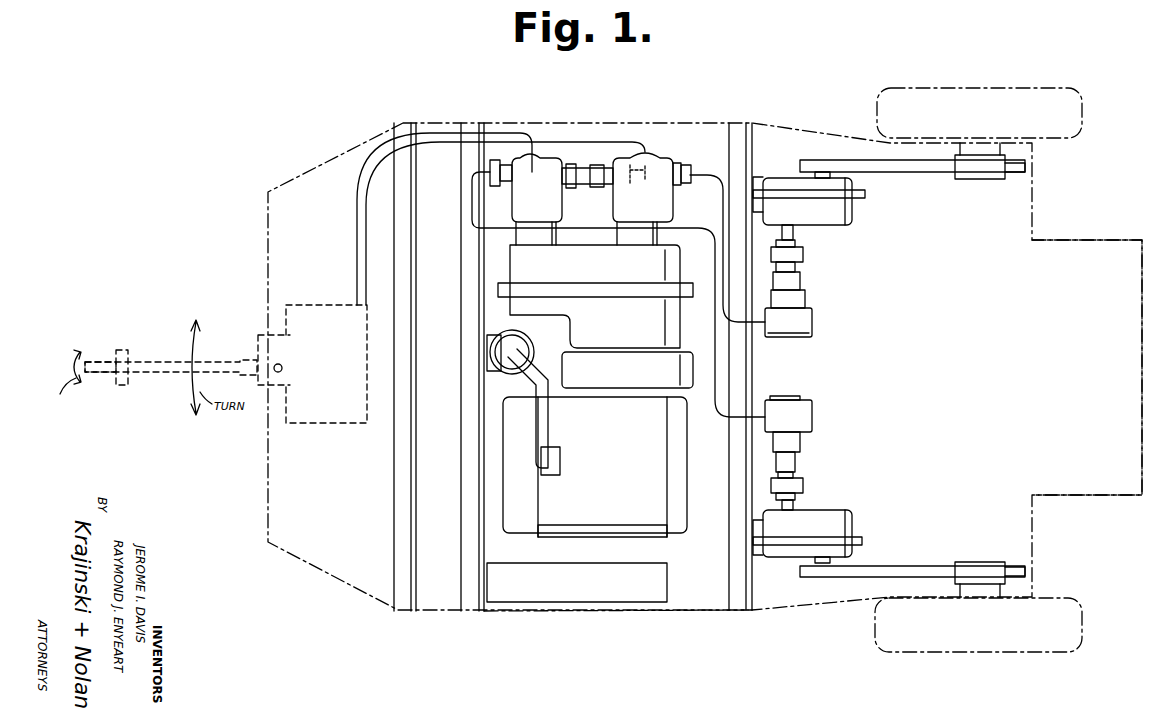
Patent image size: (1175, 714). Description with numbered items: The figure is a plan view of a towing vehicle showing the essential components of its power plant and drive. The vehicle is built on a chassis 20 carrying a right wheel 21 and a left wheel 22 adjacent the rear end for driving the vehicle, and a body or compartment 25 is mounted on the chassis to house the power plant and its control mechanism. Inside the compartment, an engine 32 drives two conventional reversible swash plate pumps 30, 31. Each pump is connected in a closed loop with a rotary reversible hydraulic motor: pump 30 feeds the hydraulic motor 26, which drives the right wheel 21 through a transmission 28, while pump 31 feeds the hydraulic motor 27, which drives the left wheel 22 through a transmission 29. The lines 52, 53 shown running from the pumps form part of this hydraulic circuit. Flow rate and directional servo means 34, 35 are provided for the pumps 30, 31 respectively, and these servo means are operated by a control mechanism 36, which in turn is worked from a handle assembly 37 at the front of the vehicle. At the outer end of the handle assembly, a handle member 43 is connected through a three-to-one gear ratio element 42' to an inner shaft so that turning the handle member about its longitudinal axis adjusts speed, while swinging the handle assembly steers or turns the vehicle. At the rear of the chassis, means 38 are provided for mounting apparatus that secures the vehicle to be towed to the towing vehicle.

The chassis 20 is at (787, 622).
The right wheel 21 is at (1045, 88).
The left wheel 22 is at (1022, 648).
The body or compartment 25 is at (686, 614).
The rotary reversible hydraulic motor 26 is at (813, 323).
The rotary reversible hydraulic motor 27 is at (813, 412).
The transmission 28 is at (853, 220).
The transmission 29 is at (853, 523).
The reversible swash plate pump 30 is at (660, 152).
The reversible swash plate pump 31 is at (543, 150).
The engine 32 is at (688, 518).
The flow rate and directional servo means 34 is at (665, 182).
The flow rate and directional servo means 35 is at (570, 172).
The control mechanism 36 is at (322, 432).
The handle assembly 37 is at (166, 390).
The mounting means 38 is at (1105, 506).
The 3-1 gear ratio element 42' is at (129, 345).
The handle member 43 is at (100, 362).
The hydraulic line 52 is at (366, 208).
The hydraulic line 53 is at (357, 209).